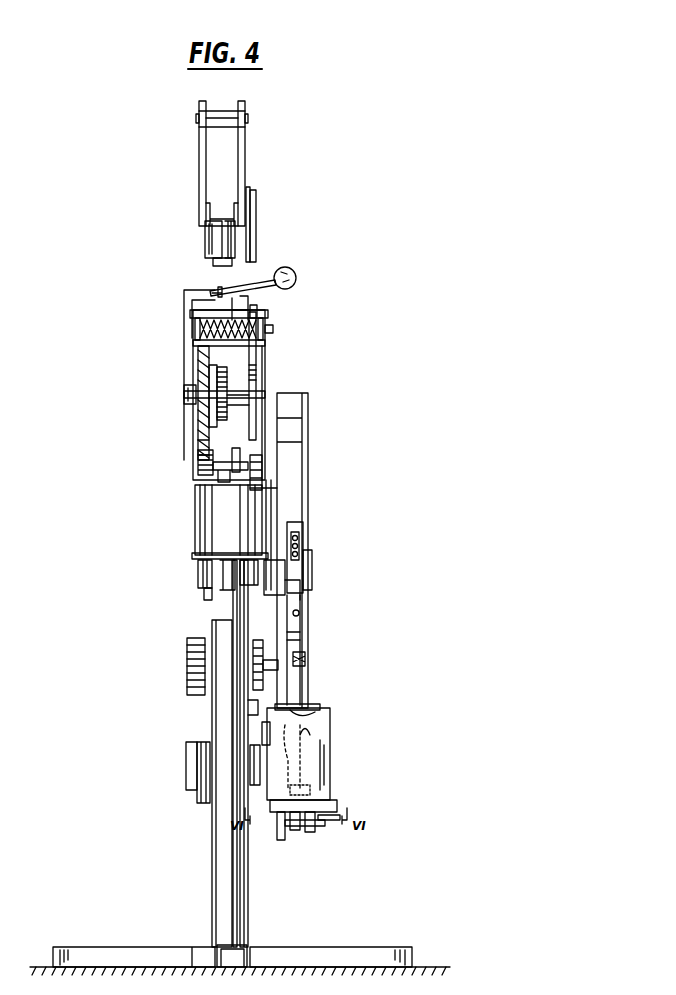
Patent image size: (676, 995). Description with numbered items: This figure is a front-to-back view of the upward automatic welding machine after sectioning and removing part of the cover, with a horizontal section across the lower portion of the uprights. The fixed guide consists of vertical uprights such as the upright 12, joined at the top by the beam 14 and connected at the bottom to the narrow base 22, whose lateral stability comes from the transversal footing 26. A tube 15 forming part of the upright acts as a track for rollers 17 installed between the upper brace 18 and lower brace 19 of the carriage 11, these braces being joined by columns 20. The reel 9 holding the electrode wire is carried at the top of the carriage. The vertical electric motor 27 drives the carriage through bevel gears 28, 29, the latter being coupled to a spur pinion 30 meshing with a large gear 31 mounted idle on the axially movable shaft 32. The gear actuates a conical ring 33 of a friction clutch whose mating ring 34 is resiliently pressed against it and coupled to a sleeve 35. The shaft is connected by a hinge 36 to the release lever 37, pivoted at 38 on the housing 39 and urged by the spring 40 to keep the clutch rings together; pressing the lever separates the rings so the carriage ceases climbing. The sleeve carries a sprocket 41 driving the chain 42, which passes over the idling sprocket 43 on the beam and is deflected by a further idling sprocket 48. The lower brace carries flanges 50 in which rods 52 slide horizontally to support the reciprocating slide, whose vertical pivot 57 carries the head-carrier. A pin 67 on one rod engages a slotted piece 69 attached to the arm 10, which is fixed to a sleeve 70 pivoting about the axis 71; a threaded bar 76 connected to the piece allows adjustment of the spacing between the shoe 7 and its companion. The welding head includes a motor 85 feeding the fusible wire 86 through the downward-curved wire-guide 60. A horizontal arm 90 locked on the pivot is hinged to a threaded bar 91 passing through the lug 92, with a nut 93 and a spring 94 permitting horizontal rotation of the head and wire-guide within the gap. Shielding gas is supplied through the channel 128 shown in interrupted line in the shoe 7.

The shoe 7 is at (330, 760).
The reel 9 is at (300, 432).
The arm 10 is at (300, 545).
The carriage 11 is at (194, 553).
The upright 12 is at (207, 245).
The beam 14 is at (245, 147).
The tube 15 is at (220, 290).
The roller 17 is at (207, 595).
The brace 18 is at (242, 548).
The brace 19 is at (197, 748).
The column 20 is at (250, 706).
The base 22 is at (254, 950).
The transversal footing 26 is at (156, 955).
The electric motor 27 is at (196, 521).
The bevel gear 28 is at (226, 472).
The bevel gear 29 is at (236, 448).
The spur pinion 30 is at (200, 465).
The large gear 31 is at (200, 432).
The shaft 32 is at (197, 380).
The conical ring 33 is at (209, 366).
The mating ring 34 is at (228, 380).
The sleeve 35 is at (240, 402).
The hinge 36 is at (190, 395).
The release lever 37 is at (190, 355).
The pivot 38 is at (190, 401).
The housing 39 is at (265, 352).
The spring 40 is at (246, 300).
The sprocket 41 is at (257, 376).
The chain 42 is at (253, 233).
The idling sprocket 43 is at (247, 187).
The idling sprocket 48 is at (262, 480).
The flange 50 is at (268, 726).
The rod 52 is at (297, 760).
The vertical pivot 57 is at (279, 840).
The wire-guide 60 is at (303, 658).
The pin 67 is at (328, 735).
The piece 69 is at (300, 646).
The sleeve 70 is at (288, 600).
The axis 71 is at (272, 585).
The threaded bar 76 is at (299, 612).
The motor 85 is at (195, 666).
The fusible wire 86 is at (300, 665).
The horizontal arm 90 is at (272, 806).
The threaded bar 91 is at (338, 822).
The lug 92 is at (296, 832).
The nut 93 is at (312, 832).
The spring 94 is at (300, 828).
The channel 128 is at (316, 710).